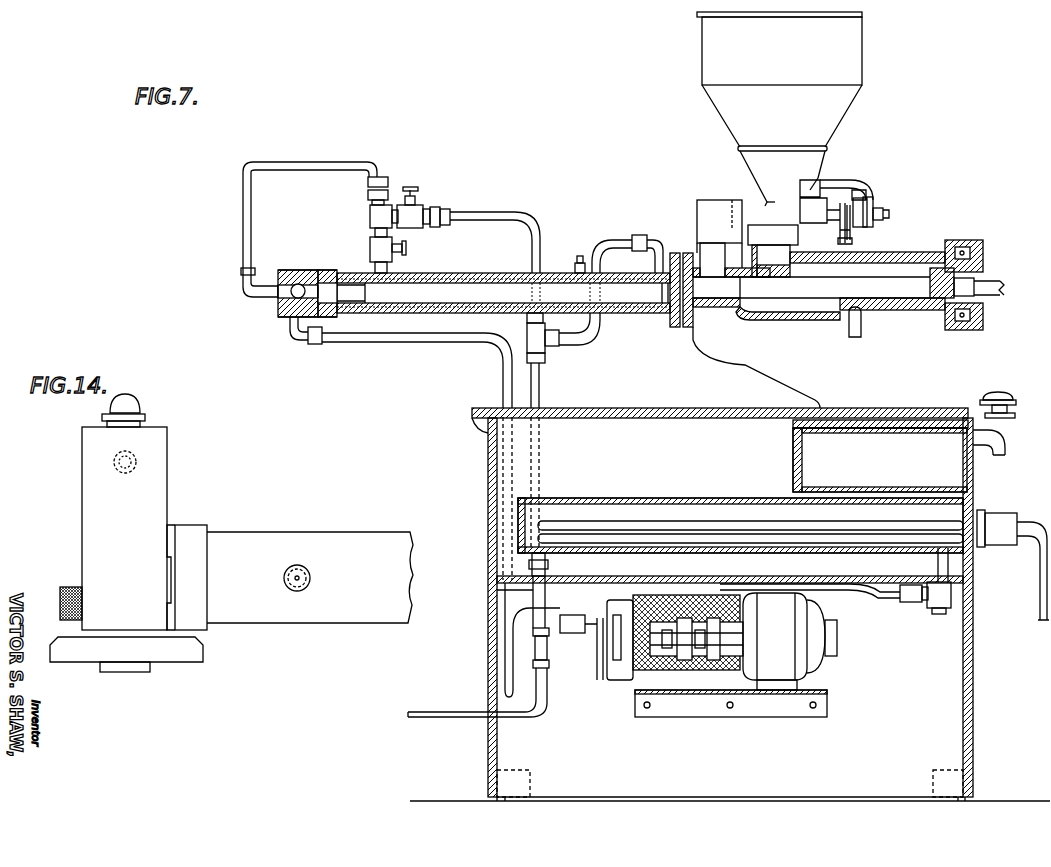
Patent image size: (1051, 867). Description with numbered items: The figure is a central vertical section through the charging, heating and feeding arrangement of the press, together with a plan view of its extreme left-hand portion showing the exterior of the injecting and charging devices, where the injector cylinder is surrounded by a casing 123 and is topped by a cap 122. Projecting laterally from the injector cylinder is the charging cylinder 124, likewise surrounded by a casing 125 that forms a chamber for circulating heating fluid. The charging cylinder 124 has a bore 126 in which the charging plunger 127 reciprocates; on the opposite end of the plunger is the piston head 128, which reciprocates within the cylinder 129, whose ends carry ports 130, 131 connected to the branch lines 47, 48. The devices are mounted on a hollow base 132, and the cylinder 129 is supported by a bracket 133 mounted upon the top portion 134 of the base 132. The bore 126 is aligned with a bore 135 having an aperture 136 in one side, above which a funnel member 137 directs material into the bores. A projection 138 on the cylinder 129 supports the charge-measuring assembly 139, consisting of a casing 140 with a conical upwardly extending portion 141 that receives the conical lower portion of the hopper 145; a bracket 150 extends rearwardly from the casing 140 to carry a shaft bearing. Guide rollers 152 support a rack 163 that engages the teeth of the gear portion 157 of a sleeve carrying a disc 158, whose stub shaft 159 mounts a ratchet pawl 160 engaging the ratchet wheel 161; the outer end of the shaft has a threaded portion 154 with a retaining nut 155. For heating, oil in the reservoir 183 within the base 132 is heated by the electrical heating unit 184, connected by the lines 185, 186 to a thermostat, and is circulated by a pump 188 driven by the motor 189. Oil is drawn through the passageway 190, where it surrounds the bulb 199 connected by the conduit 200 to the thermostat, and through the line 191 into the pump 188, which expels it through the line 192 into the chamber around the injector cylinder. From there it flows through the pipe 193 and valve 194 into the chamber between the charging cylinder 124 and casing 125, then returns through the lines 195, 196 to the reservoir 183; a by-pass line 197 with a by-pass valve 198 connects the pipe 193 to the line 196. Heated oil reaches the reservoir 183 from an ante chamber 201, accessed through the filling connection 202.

In FIG. 7, the hopper 145 is at (855, 57).
In FIG. 7, the conical upwardly extending portion 141 is at (738, 157).
In FIG. 7, the charge-measuring assembly 139 is at (812, 160).
In FIG. 7, the casing 140 is at (767, 202).
In FIG. 7, the funnel member 137 is at (718, 207).
In FIG. 7, the aperture 136 is at (717, 273).
In FIG. 7, the bore 135 is at (680, 253).
In FIG. 7, the projection 138 is at (787, 232).
In FIG. 7, the bracket 150 is at (858, 193).
In FIG. 7, the gear portion 157 is at (843, 205).
In FIG. 7, the disc 158 is at (853, 200).
In FIG. 7, the ratchet pawl 160 is at (862, 186).
In FIG. 7, the stub shaft 159 is at (867, 203).
In FIG. 7, the ratchet wheel 161 is at (868, 226).
In FIG. 7, the threaded portion 154 is at (885, 213).
In FIG. 7, the retaining nut 155 is at (884, 219).
In FIG. 7, the guide rollers 152 is at (840, 241).
In FIG. 7, the rack 163 is at (840, 230).
In FIG. 7, the casing 125 is at (457, 272).
In FIG. 14, the casing 125 is at (358, 533).
In FIG. 7, the bore 126 is at (490, 277).
In FIG. 7, the charging cylinder 124 is at (557, 273).
In FIG. 7, the charging plunger 127 is at (755, 289).
In FIG. 7, the port 131 is at (840, 316).
In FIG. 7, the cylinder 129 is at (893, 312).
In FIG. 7, the piston head 128 is at (937, 313).
In FIG. 7, the port 130 is at (988, 295).
In FIG. 7, the branch line 47 is at (995, 283).
In FIG. 7, the branch line 48 is at (867, 340).
In FIG. 7, the bracket 133 is at (770, 363).
In FIG. 7, the pipe 193 is at (255, 212).
In FIG. 7, the valve 194 is at (372, 248).
In FIG. 7, the by-pass valve 198 is at (418, 219).
In FIG. 7, the by-pass line 197 is at (498, 204).
In FIG. 7, the line 195 is at (610, 249).
In FIG. 7, the line 192 is at (358, 342).
In FIG. 7, the line 196 is at (542, 387).
In FIG. 7, the conduit 200 is at (452, 712).
In FIG. 7, the top portion 134 is at (613, 413).
In FIG. 7, the hollow base 132 is at (488, 448).
In FIG. 7, the reservoir 183 is at (563, 510).
In FIG. 7, the electrical heating unit 184 is at (770, 527).
In FIG. 7, the line 185 is at (1042, 637).
In FIG. 7, the line 186 is at (1047, 638).
In FIG. 7, the ante chamber 201 is at (795, 458).
In FIG. 7, the filling connection 202 is at (1003, 447).
In FIG. 7, the passageway 190 is at (550, 568).
In FIG. 7, the bulb 199 is at (497, 590).
In FIG. 7, the line 191 is at (623, 647).
In FIG. 7, the pump 188 is at (618, 655).
In FIG. 7, the motor 189 is at (780, 657).
In FIG. 14, the casing 123 is at (93, 494).
In FIG. 14, the cap 122 is at (136, 413).